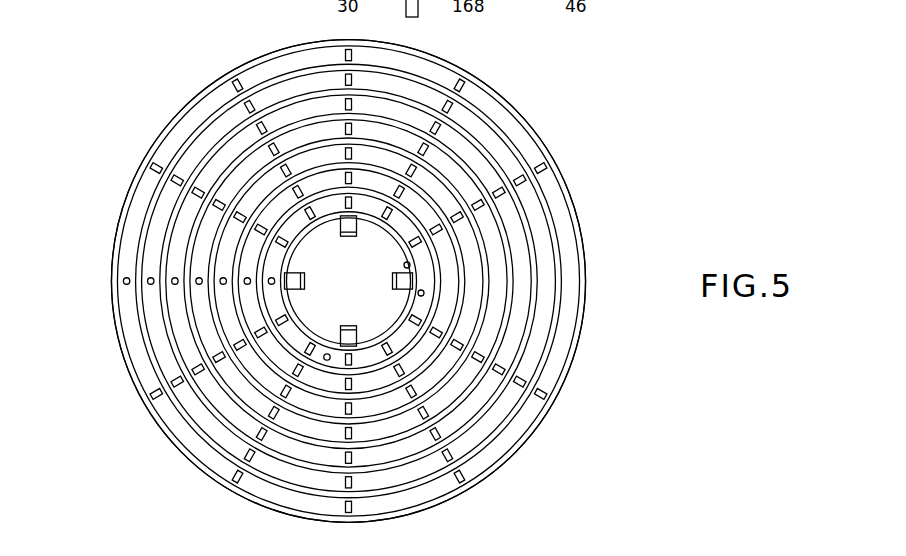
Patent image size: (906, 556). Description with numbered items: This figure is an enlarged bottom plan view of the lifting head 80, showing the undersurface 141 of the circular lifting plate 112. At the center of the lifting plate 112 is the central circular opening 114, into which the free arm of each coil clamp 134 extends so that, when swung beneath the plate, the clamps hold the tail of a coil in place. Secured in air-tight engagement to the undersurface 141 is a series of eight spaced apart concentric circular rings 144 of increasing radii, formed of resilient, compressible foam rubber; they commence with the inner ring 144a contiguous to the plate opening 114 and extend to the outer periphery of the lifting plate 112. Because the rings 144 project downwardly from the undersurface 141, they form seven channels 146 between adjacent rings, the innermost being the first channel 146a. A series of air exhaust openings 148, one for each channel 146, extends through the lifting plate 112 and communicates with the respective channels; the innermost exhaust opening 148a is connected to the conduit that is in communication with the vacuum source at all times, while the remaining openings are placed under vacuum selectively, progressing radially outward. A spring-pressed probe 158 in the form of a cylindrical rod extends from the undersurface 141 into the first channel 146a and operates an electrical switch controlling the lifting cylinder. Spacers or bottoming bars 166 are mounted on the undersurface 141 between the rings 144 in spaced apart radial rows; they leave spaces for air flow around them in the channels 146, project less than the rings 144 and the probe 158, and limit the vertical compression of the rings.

The lifting head 80 is at (562, 154).
The lifting plate 112 is at (224, 460).
The central circular opening 114 is at (410, 267).
The coil clamp 134 is at (295, 290).
The undersurface 141 is at (174, 418).
The concentric circular rings 144 is at (532, 196).
The inner ring 144a is at (388, 229).
The channels 146 is at (537, 320).
The first channel 146a is at (420, 297).
The air exhaust openings 148 is at (151, 283).
The innermost exhaust opening 148a is at (273, 278).
The spring-pressed probe 158 is at (327, 353).
The spacers or bottoming bars 166 is at (343, 77).